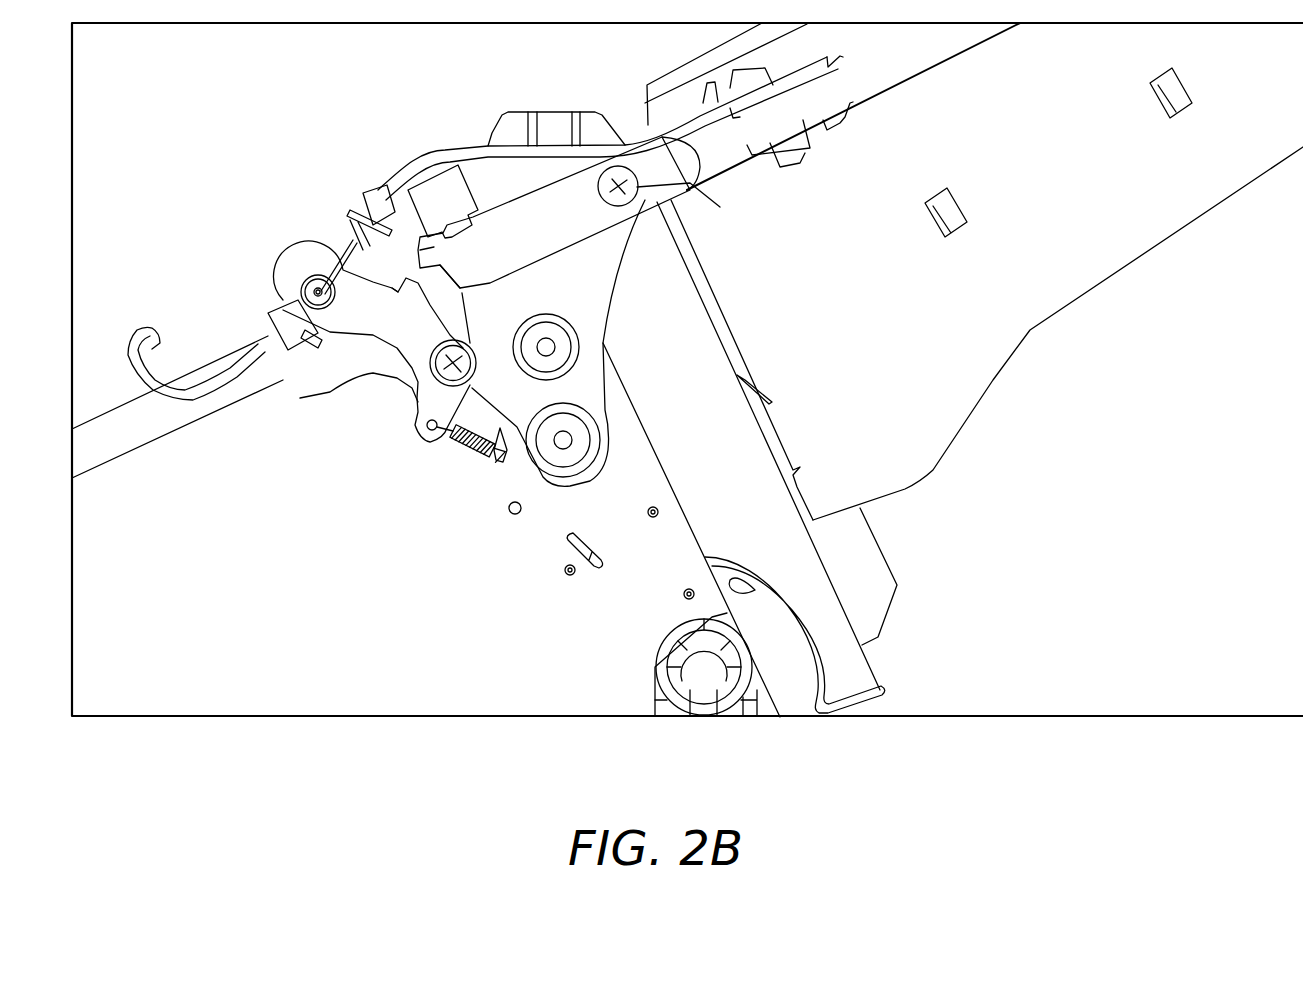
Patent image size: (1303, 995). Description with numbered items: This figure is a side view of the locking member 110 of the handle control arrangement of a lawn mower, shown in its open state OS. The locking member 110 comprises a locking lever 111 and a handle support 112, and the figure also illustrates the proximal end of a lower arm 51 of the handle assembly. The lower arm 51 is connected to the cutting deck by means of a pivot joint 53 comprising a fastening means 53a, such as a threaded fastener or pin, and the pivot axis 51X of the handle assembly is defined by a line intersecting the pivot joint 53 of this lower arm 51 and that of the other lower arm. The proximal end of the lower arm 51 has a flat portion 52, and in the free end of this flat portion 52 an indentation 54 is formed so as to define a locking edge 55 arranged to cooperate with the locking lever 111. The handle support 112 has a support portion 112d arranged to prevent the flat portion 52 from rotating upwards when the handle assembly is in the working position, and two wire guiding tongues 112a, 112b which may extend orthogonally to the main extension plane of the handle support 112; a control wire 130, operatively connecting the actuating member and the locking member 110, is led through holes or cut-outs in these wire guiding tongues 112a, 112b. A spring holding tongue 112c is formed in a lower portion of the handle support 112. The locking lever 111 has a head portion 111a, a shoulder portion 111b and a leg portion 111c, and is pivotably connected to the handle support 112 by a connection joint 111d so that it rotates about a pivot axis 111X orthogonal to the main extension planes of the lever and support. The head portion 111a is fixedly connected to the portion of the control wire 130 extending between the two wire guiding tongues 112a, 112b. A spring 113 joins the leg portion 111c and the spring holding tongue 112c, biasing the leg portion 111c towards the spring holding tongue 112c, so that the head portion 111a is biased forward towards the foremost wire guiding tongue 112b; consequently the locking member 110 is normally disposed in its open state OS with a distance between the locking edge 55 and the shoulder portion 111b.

The lower arm 51 is at (887, 78).
The pivot axis 51X is at (618, 195).
The flat portion 52 is at (559, 212).
The pivot joint 53 is at (588, 188).
The fastening means 53a is at (692, 207).
The indentation 54 is at (458, 290).
The locking edge 55 is at (433, 260).
The locking member 110 is at (410, 470).
The locking lever 111 is at (403, 326).
The head portion 111a is at (303, 280).
The shoulder portion 111b is at (397, 288).
The leg portion 111c is at (417, 412).
The connection joint 111d is at (412, 388).
The pivot axis 111X is at (453, 364).
The handle support 112 is at (595, 273).
The wire guiding tongue 112a is at (352, 218).
The wire guiding tongue 112b is at (276, 318).
The spring holding tongue 112c is at (493, 467).
The support portion 112d is at (448, 207).
The spring 113 is at (470, 453).
The control wire 130 is at (643, 157).
The open state OS is at (260, 164).